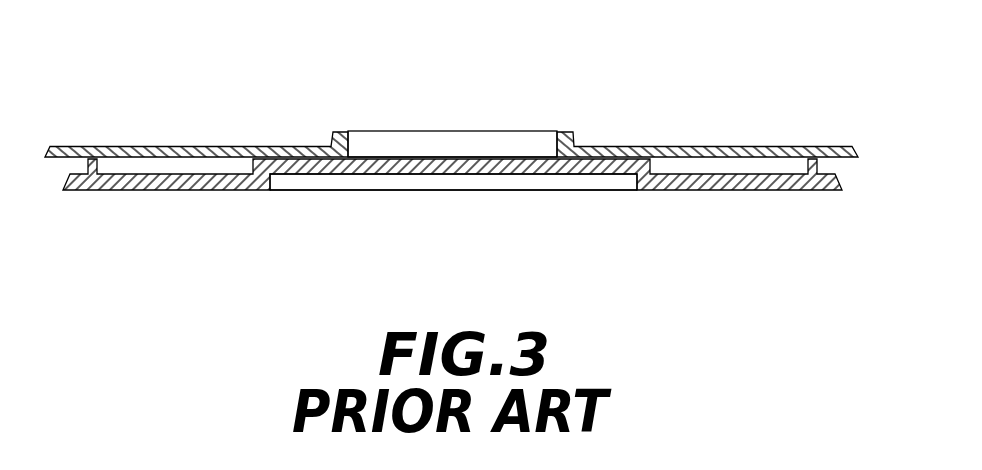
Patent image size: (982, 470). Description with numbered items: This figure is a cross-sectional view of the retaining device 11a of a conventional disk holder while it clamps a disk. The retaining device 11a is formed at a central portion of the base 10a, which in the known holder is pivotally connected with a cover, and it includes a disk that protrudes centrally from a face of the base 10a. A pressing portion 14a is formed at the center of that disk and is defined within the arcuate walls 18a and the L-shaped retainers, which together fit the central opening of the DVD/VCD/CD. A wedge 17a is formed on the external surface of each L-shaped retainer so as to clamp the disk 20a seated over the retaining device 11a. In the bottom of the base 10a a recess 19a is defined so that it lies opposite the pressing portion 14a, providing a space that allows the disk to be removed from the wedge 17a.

The base 10a is at (673, 205).
The retaining device 11a is at (317, 120).
The pressing portion 14a is at (455, 157).
The wedge 17a is at (573, 143).
The arcuate wall 18a is at (565, 132).
The recess 19a is at (310, 182).
The right lid plate portion 20a is at (765, 153).